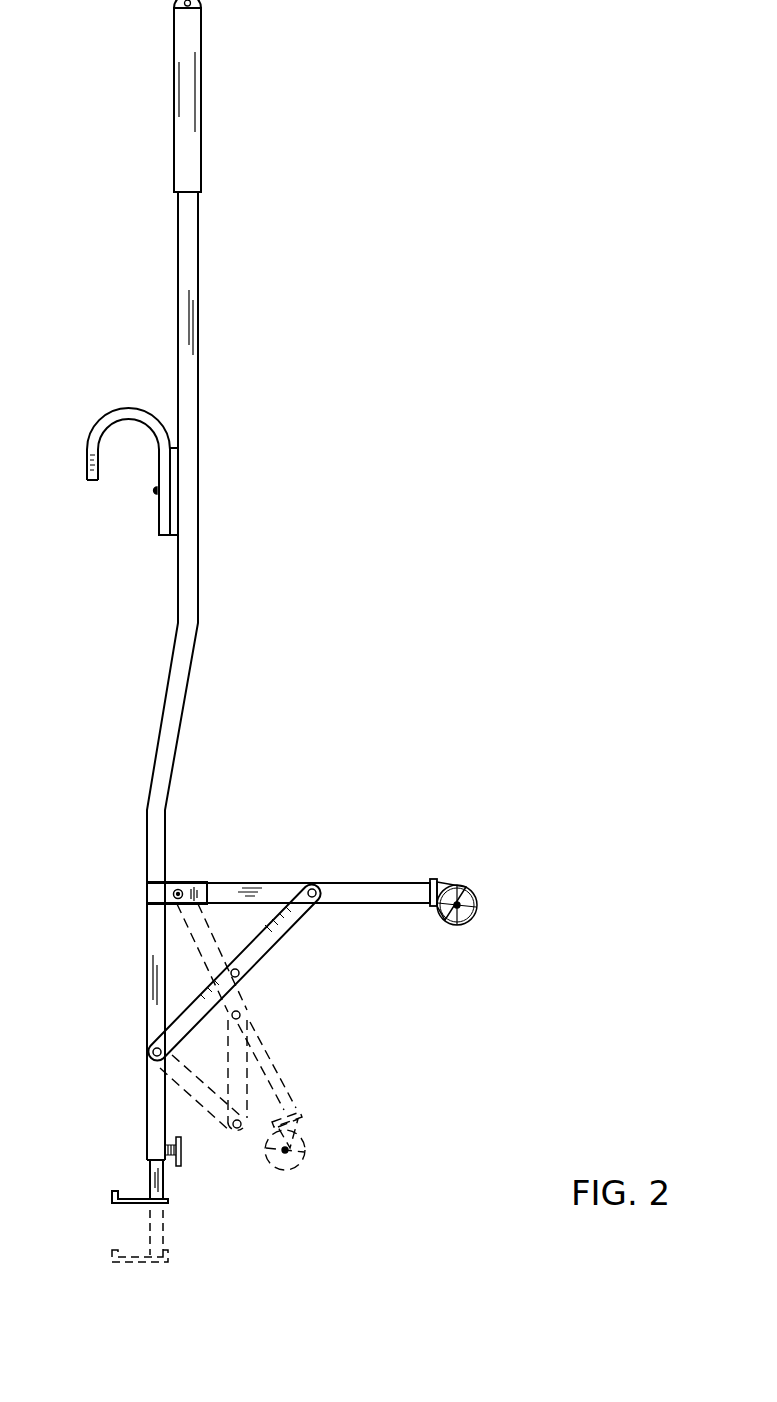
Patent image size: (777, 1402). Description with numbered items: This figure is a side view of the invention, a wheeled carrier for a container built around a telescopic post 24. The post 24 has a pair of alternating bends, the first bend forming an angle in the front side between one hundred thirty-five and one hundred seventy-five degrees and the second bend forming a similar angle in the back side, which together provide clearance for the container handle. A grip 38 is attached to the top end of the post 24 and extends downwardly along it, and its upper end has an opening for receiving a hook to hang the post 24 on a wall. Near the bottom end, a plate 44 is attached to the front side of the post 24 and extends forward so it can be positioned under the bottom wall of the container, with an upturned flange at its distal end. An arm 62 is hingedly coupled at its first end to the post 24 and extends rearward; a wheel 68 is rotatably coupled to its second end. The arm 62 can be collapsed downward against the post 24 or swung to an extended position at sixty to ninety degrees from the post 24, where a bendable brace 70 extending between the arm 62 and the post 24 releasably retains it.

The grip 38 is at (195, 108).
The post 24 is at (178, 744).
The arm 62 is at (375, 882).
The wheel 68 is at (470, 922).
The brace 70 is at (265, 957).
The plate 44 is at (128, 1203).